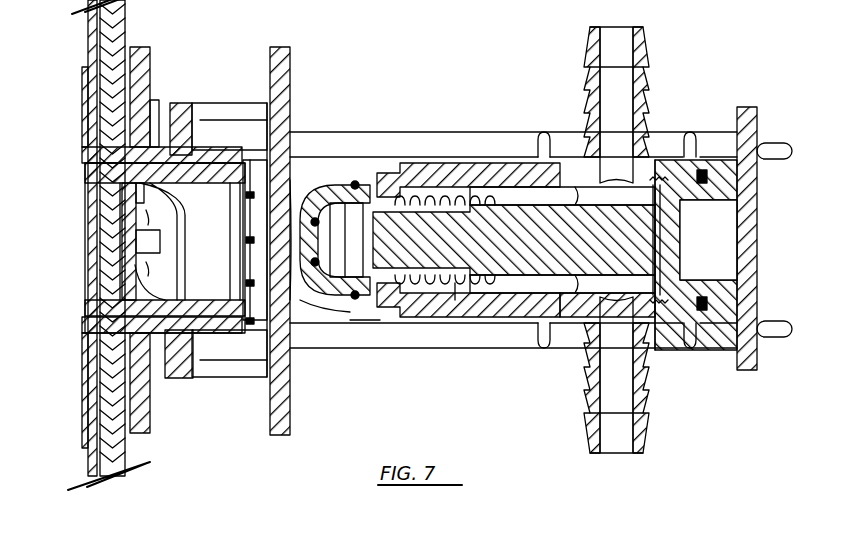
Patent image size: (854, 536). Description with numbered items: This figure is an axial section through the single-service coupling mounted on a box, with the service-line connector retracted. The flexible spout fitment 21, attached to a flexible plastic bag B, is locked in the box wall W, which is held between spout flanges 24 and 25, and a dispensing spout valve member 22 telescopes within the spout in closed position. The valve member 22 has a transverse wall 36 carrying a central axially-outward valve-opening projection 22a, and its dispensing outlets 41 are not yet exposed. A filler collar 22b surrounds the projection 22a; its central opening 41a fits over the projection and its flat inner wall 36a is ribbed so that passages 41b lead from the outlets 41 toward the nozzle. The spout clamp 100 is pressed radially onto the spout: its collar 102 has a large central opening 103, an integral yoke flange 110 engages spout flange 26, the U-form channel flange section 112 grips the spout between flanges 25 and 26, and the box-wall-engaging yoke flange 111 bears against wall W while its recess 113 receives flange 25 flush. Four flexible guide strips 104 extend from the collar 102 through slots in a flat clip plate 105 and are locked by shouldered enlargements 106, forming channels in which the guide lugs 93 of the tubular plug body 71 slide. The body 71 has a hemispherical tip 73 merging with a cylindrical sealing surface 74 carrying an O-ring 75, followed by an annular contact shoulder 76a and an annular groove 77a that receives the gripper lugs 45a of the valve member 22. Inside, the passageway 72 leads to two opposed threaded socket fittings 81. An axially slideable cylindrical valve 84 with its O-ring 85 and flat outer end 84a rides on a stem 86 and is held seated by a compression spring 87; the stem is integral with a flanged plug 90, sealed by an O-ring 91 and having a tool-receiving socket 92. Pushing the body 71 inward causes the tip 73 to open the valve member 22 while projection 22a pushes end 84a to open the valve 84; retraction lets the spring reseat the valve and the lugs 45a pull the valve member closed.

The flexible plastic bag B is at (90, 32).
The box wall W is at (108, 54).
The spout flange 24 is at (95, 127).
The spout flange 25 is at (135, 147).
The box wall engaging flange 111 is at (143, 50).
The spout clamp 100 is at (153, 62).
The flange-receiving recess 113 is at (148, 118).
The spout-engaging channel flange section 112 is at (178, 128).
The spout flange 26 is at (205, 130).
The yoke flange 110 is at (246, 135).
The gripper lugs 45a is at (250, 330).
The collar 102 is at (292, 424).
The dispensing spout valve member 22 is at (100, 183).
The transverse wall 36 is at (122, 260).
The valve-opening projection 22a is at (160, 240).
The dispensing outlets 41 is at (140, 185).
The flat inner wall 36a is at (150, 200).
The central opening 41a is at (148, 218).
The passages 41b is at (148, 270).
The filler collar 22b is at (152, 296).
The spout fitment 21 is at (85, 335).
The flexible guide strips 104 is at (475, 155).
The central opening 103 is at (297, 175).
The axially slideable cylindrical valve 84 is at (362, 185).
The flat outer end 84a is at (353, 185).
The O-ring 85 is at (316, 266).
The O-ring 75 is at (350, 203).
The tubular plug body 71 is at (460, 157).
The stem 86 is at (572, 245).
The annular groove 77a is at (415, 300).
The annular contact shoulder 76a is at (405, 285).
The compression spring 87 is at (462, 300).
The cylindrical sealing surface 74 is at (362, 330).
The tip 73 is at (330, 300).
The passageway 72 is at (578, 340).
The guide lugs 93 is at (544, 132).
The threaded socket fittings 81 is at (628, 45).
The flanged plug 90 is at (727, 190).
The tool-receiving socket 92 is at (712, 242).
The flat clip plate 105 is at (748, 108).
The shouldered enlargements 106 is at (769, 148).
The O-ring 91 is at (703, 312).